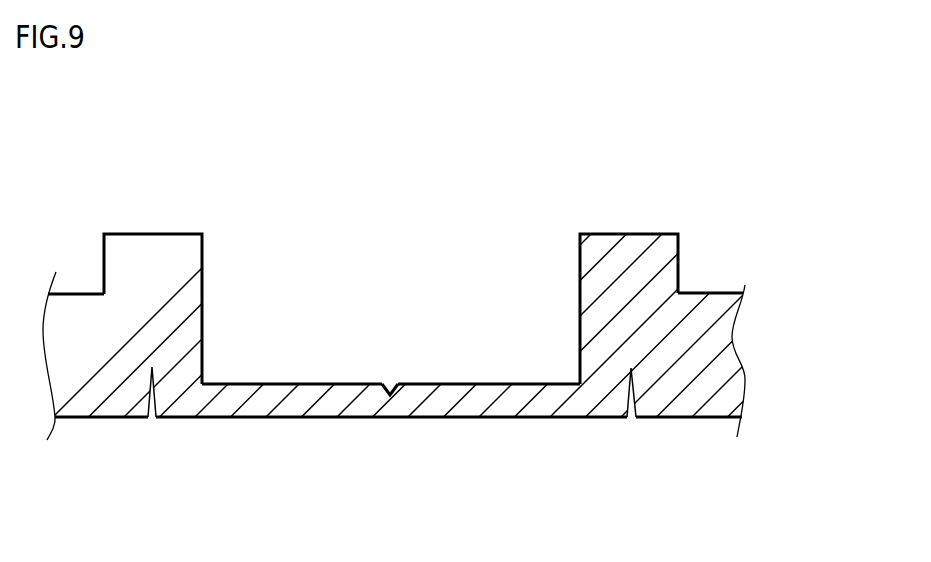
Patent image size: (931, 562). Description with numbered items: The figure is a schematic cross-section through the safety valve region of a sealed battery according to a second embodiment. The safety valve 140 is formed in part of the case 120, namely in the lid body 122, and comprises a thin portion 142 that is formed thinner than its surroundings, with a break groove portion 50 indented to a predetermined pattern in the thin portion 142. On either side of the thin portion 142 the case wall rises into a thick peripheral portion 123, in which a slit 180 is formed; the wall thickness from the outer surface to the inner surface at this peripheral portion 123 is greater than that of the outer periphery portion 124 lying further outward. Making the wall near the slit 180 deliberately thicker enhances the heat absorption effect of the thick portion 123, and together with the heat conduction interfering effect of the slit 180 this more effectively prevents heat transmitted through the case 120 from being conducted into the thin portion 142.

The case 120 is at (693, 178).
The lid body 122 is at (394, 356).
The peripheral portion 123 is at (145, 233).
The outer periphery portion 124 is at (85, 293).
The safety valve 140 is at (487, 323).
The thin portion 142 is at (270, 384).
The break groove portion 50 is at (390, 378).
The slit 180 is at (152, 420).